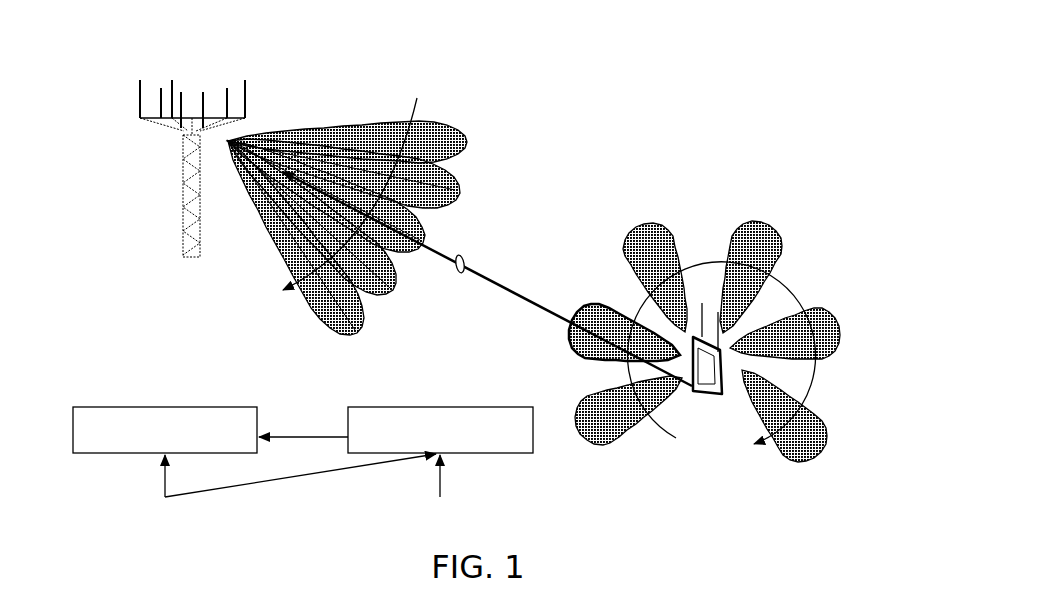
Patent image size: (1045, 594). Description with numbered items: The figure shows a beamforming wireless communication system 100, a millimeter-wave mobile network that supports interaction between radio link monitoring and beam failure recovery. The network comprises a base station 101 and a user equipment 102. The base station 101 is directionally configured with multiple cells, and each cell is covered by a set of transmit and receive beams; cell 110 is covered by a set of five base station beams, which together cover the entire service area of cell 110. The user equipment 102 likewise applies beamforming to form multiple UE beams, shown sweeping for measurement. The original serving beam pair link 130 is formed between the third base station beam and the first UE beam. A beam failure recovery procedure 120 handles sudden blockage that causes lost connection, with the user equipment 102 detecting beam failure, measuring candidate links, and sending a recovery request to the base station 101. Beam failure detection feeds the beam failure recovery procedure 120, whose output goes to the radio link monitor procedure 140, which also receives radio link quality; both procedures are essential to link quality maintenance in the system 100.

The beamforming wireless communication system 100 is at (798, 56).
The base station 101 is at (196, 84).
The user equipment 102 is at (710, 307).
The cell 110 is at (345, 189).
The beam failure recovery procedure 120 is at (443, 405).
The serving beam pair link 130 is at (460, 274).
The radio link monitor procedure 140 is at (165, 405).